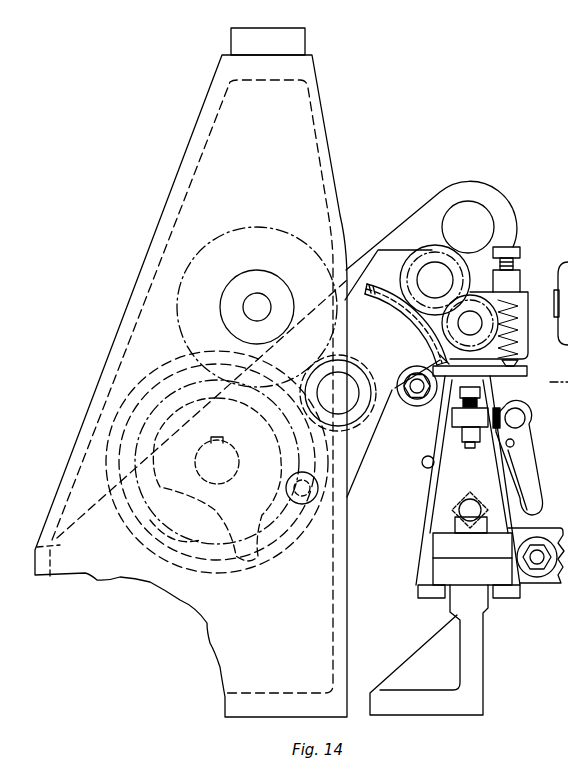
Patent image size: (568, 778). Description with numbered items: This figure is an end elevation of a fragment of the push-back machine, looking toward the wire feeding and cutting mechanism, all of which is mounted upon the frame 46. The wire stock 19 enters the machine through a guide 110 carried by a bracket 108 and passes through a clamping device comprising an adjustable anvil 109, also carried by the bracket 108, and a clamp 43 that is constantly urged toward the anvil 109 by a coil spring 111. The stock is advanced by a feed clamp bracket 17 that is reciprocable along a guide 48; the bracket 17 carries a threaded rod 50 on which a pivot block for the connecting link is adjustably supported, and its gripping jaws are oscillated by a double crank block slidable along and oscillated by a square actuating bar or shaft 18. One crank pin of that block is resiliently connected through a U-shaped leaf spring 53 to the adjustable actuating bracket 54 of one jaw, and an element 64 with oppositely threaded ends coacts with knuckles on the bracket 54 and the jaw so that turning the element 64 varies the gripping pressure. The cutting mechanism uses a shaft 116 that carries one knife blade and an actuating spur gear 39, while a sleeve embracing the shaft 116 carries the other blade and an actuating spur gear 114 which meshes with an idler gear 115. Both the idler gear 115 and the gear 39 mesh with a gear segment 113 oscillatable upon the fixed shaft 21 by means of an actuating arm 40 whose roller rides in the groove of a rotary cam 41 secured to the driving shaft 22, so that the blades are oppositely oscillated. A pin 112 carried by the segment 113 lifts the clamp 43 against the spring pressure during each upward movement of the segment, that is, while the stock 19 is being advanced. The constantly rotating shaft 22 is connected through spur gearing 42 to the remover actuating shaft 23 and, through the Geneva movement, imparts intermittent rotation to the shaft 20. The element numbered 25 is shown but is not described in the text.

The feed clamp bracket 17 is at (428, 496).
The square actuating bar or shaft 18 is at (460, 510).
The wire stock 19 is at (417, 399).
The shaft 20 is at (465, 212).
The fixed shaft 21 is at (357, 402).
The driving shaft 22 is at (219, 473).
The remover actuating shaft 23 is at (258, 305).
The top block 25 is at (288, 40).
The actuating spur gear 39 is at (476, 298).
The actuating arm 40 is at (297, 440).
The rotary cam 41 is at (250, 560).
The spur gearing 42 is at (181, 346).
The clamp 43 is at (442, 362).
The frame 46 is at (258, 705).
The guide 48 is at (450, 575).
The threaded rod 50 is at (537, 567).
The U-shaped leaf spring 53 is at (540, 484).
The adjustable actuating bracket 54 is at (528, 428).
The element having oppositely threaded ends 64 is at (528, 414).
The bracket 108 is at (470, 448).
The adjustable anvil 109 is at (462, 443).
The guide 110 is at (481, 390).
The coil spring 111 is at (500, 322).
The pin 112 is at (404, 384).
The gear segment 113 is at (385, 293).
The actuating spur gear 114 is at (435, 280).
The idler gear 115 is at (440, 248).
The shaft 116 is at (472, 327).